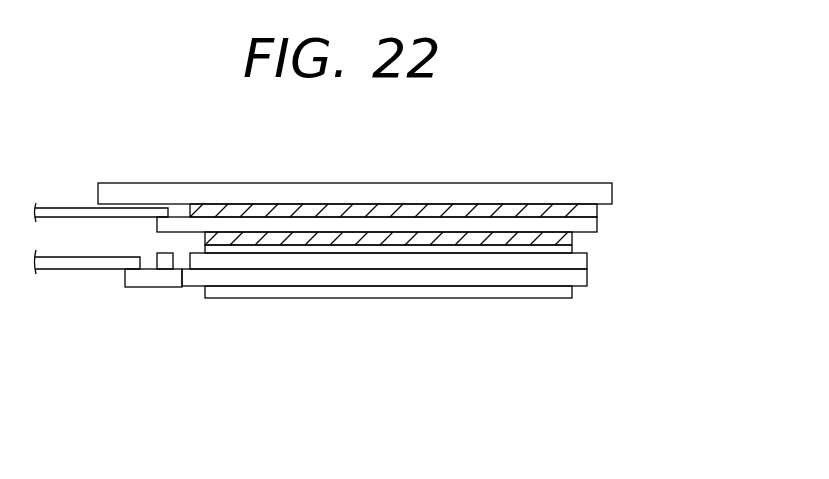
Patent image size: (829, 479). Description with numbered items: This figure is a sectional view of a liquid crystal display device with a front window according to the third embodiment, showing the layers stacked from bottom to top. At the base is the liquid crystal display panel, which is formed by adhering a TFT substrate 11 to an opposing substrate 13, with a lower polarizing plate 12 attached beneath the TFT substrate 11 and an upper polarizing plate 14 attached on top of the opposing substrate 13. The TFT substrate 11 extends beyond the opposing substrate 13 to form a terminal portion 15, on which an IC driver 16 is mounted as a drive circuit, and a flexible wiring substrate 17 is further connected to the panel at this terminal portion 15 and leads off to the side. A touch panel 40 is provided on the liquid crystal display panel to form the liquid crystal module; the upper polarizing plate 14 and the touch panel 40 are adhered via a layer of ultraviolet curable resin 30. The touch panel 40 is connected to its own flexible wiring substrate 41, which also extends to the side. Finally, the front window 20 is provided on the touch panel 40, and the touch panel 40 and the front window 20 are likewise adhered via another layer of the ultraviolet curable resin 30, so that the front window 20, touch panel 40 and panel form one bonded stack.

The front window 20 is at (560, 184).
The flexible wiring substrate for the touch panel 41 is at (64, 208).
The ultraviolet curable resin 30 is at (598, 208).
The touch panel 40 is at (597, 220).
The upper polarizing plate 14 is at (327, 248).
The opposing substrate 13 is at (376, 262).
The TFT substrate 11 is at (437, 278).
The lower polarizing plate 12 is at (488, 292).
The terminal portion 15 is at (181, 269).
The IC driver 16 is at (163, 262).
The flexible wiring substrate 17 is at (75, 270).